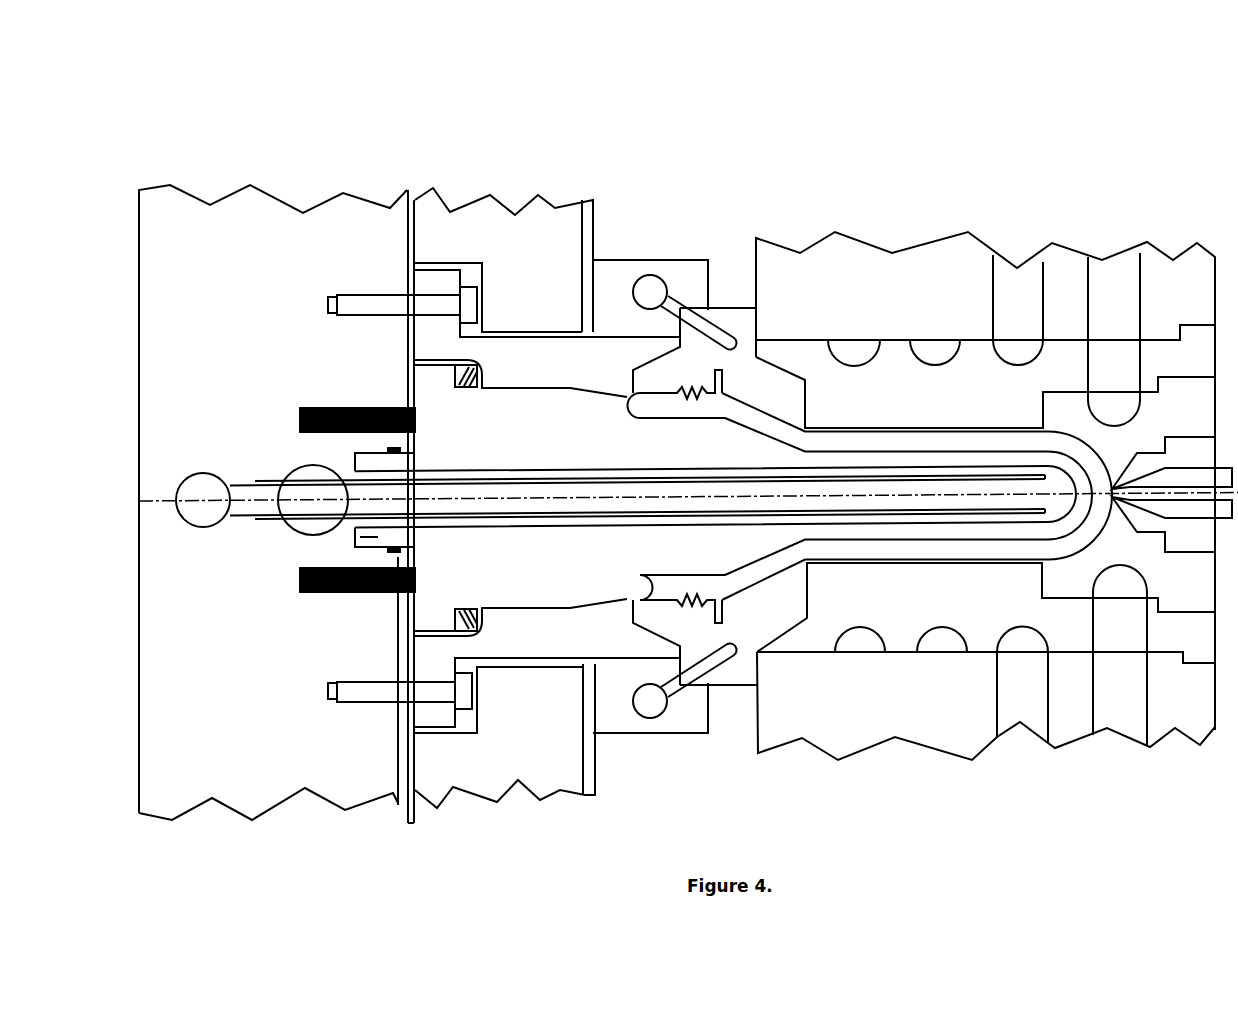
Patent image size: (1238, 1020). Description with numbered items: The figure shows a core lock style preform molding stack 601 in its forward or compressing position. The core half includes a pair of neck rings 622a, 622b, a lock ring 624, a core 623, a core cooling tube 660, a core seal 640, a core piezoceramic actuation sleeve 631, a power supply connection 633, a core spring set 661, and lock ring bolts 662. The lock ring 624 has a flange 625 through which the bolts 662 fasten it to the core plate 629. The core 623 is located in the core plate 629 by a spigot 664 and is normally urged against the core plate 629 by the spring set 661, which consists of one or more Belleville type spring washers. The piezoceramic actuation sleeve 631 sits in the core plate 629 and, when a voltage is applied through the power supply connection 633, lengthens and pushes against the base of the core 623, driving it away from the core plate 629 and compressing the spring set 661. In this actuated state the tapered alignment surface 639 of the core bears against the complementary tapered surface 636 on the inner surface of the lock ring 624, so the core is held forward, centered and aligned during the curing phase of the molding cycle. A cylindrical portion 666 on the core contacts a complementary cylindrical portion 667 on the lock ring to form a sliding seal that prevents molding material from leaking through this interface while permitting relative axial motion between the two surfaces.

The preform molding stack 601 is at (994, 398).
The neck ring 622a is at (750, 375).
The neck ring 622b is at (772, 605).
The core 623 is at (624, 422).
The lock ring 624 is at (511, 469).
The flange 625 is at (433, 283).
The core plate 629 is at (237, 250).
The core piezoceramic actuation sleeve 631 is at (330, 408).
The power supply connection 633 is at (403, 780).
The tapered surface 636 is at (593, 605).
The tapered alignment surface 639 is at (583, 605).
The core seal 640 is at (330, 590).
The core cooling tube 660 is at (360, 537).
The core spring set 661 is at (455, 378).
The lock ring bolts 662 is at (388, 303).
The spigot 664 is at (277, 523).
The cylindrical portion 666 is at (613, 597).
The cylindrical portion 667 is at (703, 733).